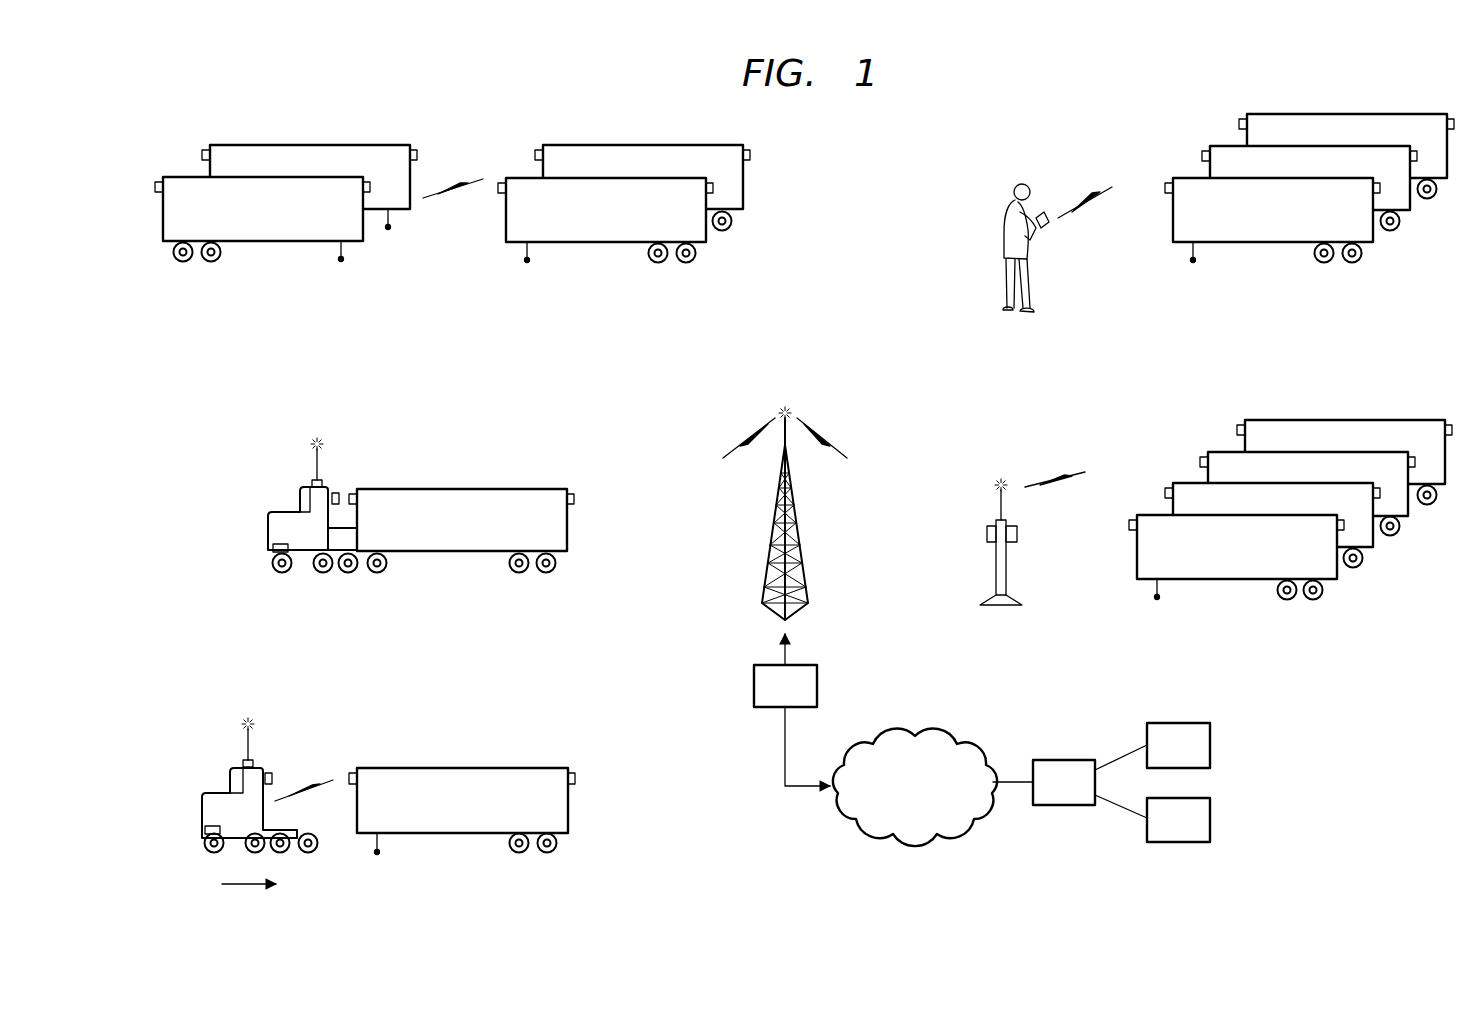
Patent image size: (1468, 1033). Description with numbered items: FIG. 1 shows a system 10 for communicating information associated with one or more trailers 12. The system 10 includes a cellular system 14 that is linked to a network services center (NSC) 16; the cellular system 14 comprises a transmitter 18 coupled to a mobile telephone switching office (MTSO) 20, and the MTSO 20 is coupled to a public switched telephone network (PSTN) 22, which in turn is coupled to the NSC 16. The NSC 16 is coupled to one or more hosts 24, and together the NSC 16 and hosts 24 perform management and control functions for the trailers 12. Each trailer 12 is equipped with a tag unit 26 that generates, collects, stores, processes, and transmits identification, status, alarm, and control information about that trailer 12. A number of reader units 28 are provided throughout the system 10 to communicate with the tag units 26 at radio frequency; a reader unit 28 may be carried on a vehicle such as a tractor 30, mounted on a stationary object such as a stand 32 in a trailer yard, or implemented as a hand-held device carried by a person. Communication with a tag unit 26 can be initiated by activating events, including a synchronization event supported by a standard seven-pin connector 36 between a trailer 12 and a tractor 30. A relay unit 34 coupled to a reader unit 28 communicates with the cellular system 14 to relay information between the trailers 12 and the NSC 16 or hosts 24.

The system 10 is at (978, 127).
The trailer 12 is at (310, 145).
The cellular system 14 is at (727, 651).
The network services center 16 is at (1064, 805).
The transmitter 18 is at (768, 550).
The mobile telephone switching office 20 is at (754, 690).
The public switched telephone network 22 is at (852, 822).
The host 24 is at (1177, 723).
The tag unit 26 is at (366, 181).
The reader unit 28 is at (1043, 218).
The tractor 30 is at (268, 538).
The stand 32 is at (1001, 607).
The relay unit 34 is at (312, 483).
The seven-pin connector 36 is at (350, 522).